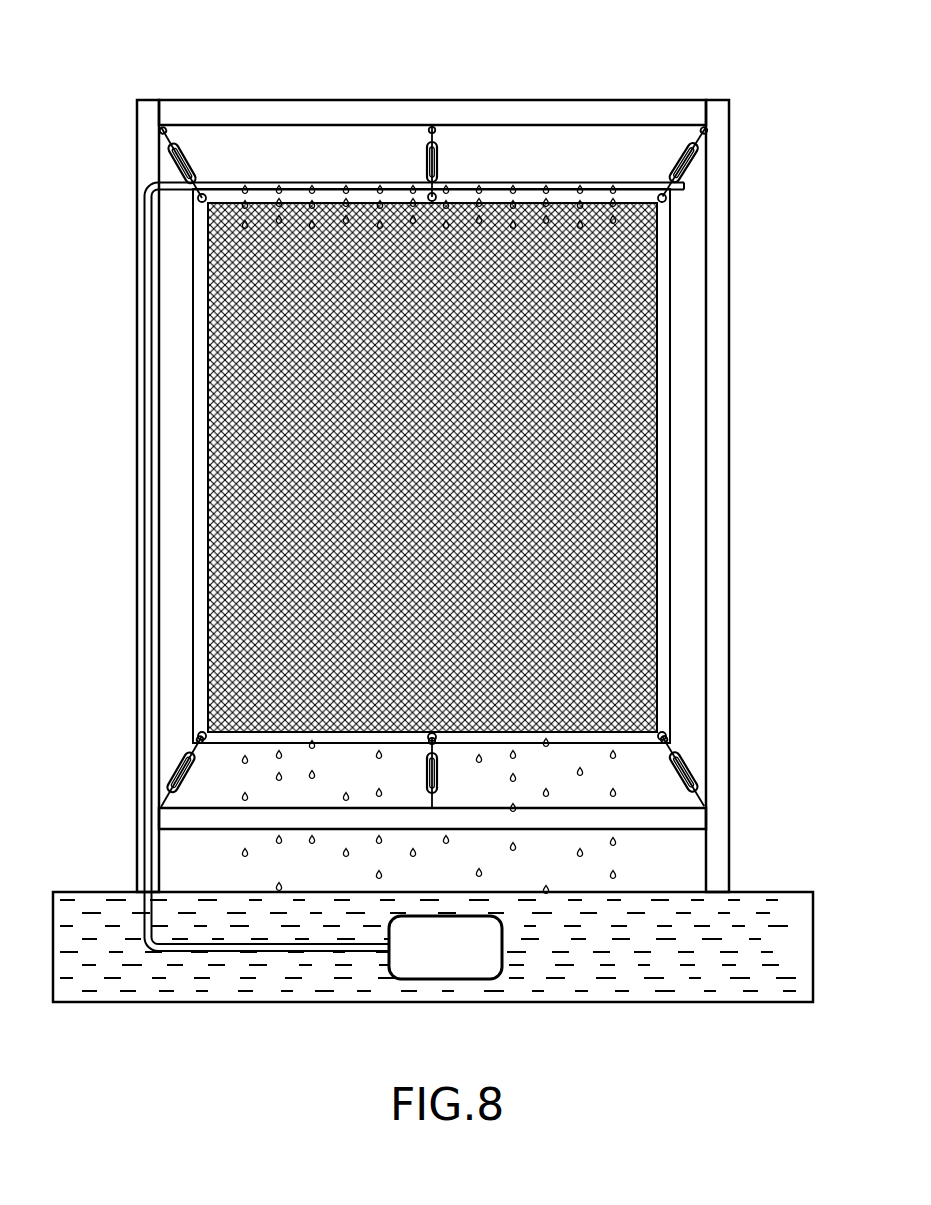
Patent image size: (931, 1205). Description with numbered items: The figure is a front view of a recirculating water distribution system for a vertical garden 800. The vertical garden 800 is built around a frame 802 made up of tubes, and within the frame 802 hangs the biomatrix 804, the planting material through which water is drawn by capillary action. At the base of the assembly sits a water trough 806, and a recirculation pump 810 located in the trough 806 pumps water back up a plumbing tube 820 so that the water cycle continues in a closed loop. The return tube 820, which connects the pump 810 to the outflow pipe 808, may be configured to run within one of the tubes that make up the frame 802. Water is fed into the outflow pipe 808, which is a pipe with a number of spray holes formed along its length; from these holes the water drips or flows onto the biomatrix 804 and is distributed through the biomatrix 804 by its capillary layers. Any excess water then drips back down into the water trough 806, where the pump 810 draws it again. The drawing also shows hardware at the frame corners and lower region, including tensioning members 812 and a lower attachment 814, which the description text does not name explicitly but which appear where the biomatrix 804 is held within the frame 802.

The vertical garden 800 is at (735, 36).
The frame 802 is at (730, 155).
The biomatrix 804 is at (633, 335).
The trough 806 is at (673, 1002).
The outflow pipe 808 is at (558, 182).
The recirculation pump 810 is at (468, 980).
The turnbuckle 812 is at (687, 765).
The lower cross bar 814 is at (703, 799).
The plumbing tube 820 is at (147, 853).